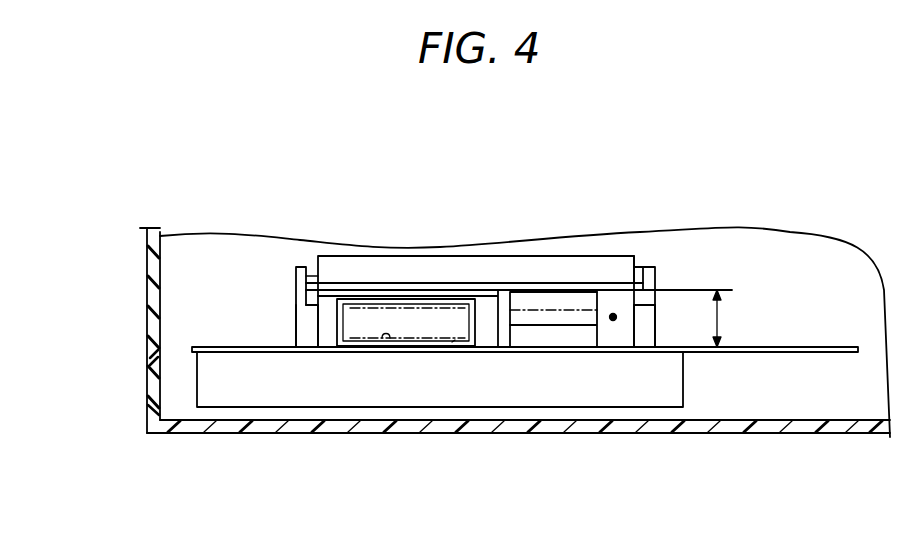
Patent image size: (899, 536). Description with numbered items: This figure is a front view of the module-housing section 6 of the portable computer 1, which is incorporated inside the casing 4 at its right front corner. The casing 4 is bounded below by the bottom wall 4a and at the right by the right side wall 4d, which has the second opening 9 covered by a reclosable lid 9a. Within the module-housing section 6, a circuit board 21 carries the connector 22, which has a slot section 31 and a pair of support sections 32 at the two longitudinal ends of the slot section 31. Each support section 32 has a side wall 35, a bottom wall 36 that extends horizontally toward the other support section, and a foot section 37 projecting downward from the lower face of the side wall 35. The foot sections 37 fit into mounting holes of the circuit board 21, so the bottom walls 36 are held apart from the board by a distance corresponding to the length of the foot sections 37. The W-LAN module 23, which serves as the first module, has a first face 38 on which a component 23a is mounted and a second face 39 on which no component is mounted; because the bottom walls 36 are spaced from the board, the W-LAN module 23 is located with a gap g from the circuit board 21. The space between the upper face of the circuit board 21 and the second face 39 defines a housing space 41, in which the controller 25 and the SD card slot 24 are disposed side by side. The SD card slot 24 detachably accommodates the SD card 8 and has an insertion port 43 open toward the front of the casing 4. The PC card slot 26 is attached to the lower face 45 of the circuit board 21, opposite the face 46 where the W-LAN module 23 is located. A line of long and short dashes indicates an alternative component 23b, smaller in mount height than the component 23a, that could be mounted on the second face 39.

The portable computer 1 is at (738, 190).
The casing 4 is at (470, 364).
The bottom wall 4a is at (320, 434).
The right side wall 4d is at (146, 318).
The module-housing section 6 is at (780, 302).
The SD card 8 is at (455, 342).
The second opening 9 is at (146, 360).
The reclosable lid 9a is at (150, 400).
The circuit board 21 is at (797, 353).
The connector 22 is at (658, 268).
The W-LAN module 23 is at (305, 288).
The component 23a is at (367, 270).
The component 23b is at (555, 312).
The SD card slot 24 is at (414, 347).
The controller 25 is at (590, 335).
The PC card slot 26 is at (520, 400).
The slot section 31 is at (645, 266).
The support sections 32 is at (296, 278).
The side wall 35 is at (300, 266).
The bottom wall 36 is at (306, 300).
The foot section 37 is at (308, 336).
The first face 38 is at (497, 290).
The second face 39 is at (502, 335).
The housing space 41 is at (612, 313).
The insertion port 43 is at (386, 340).
The lower face 45 is at (752, 353).
The face 46 is at (790, 346).
The gap g is at (722, 316).